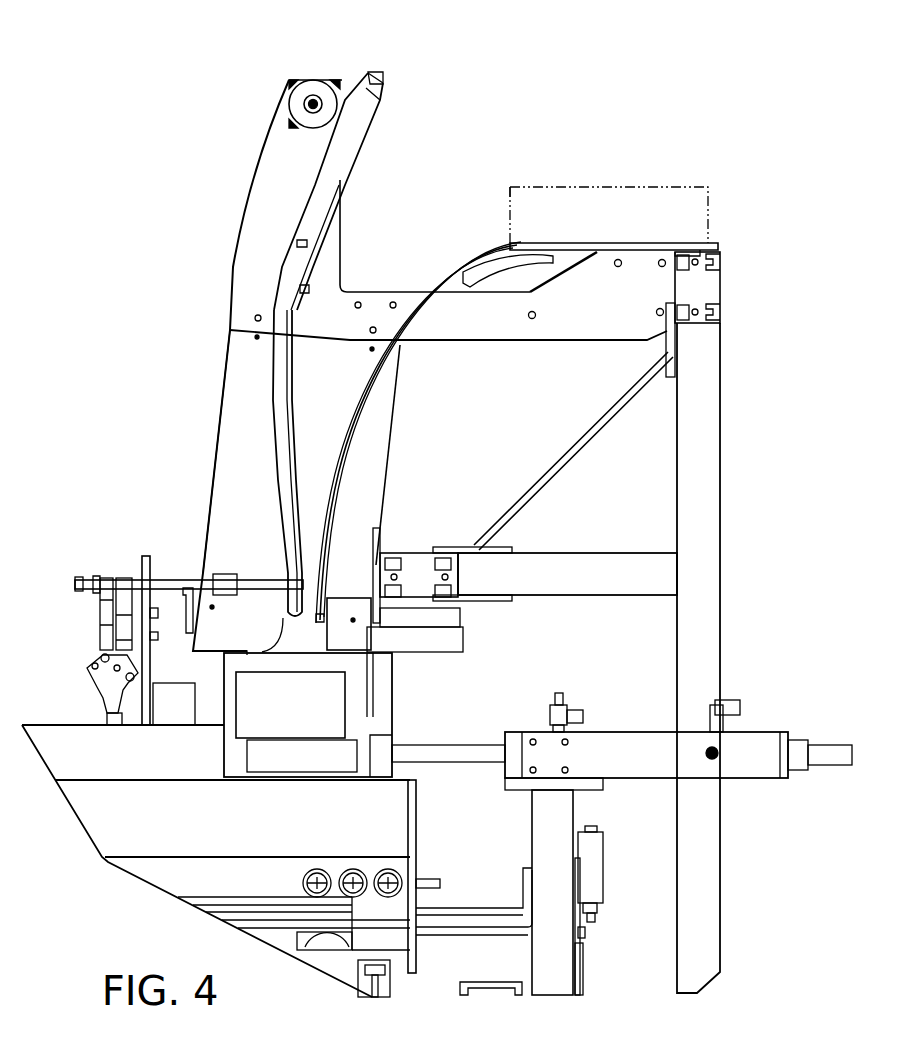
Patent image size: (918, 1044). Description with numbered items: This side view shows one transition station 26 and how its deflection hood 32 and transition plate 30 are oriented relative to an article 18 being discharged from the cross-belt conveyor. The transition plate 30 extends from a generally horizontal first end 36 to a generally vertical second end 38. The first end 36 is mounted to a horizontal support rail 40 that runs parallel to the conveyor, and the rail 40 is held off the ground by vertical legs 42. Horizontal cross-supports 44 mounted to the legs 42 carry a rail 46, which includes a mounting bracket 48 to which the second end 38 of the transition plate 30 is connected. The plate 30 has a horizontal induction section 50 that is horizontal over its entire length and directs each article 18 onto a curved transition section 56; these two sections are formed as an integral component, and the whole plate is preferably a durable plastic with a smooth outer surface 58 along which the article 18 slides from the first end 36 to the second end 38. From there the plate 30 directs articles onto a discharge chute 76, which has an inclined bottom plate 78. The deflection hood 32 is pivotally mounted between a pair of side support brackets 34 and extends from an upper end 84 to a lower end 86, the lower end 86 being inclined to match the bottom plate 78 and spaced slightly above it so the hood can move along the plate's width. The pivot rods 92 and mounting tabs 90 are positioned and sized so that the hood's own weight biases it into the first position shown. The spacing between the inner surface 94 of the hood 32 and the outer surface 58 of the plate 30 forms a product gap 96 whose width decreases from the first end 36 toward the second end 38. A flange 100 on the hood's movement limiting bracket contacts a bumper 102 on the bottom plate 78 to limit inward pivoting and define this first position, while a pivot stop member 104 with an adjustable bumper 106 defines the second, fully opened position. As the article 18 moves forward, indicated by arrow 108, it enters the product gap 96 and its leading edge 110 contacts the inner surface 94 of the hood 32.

The article 18 is at (575, 195).
The transition station 26 is at (422, 128).
The transition plate 30 is at (430, 325).
The deflection hood 32 is at (330, 210).
The side support brackets 34 is at (258, 205).
The first end 36 is at (714, 241).
The second end 38 is at (305, 625).
The horizontal support rail 40 is at (697, 288).
The vertical legs 42 is at (700, 522).
The horizontal cross-supports 44 is at (568, 566).
The rail 46 is at (425, 570).
The mounting bracket 48 is at (340, 610).
The induction section 50 is at (640, 240).
The curved transition section 56 is at (428, 298).
The outer surface 58 is at (493, 252).
The discharge chute 76 is at (244, 447).
The bottom plate 78 is at (208, 535).
The upper end 84 is at (378, 78).
The lower end 86 is at (290, 625).
The mounting tabs 90 is at (338, 97).
The pivot rods 92 is at (313, 114).
The inner surface 94 is at (290, 415).
The product gap 96 is at (290, 300).
The flange 100 is at (185, 627).
The bumper 102 is at (218, 609).
The pivot stop member 104 is at (152, 566).
The bumper 106 is at (217, 580).
The arrow 108 is at (418, 256).
The leading edge 110 is at (510, 190).